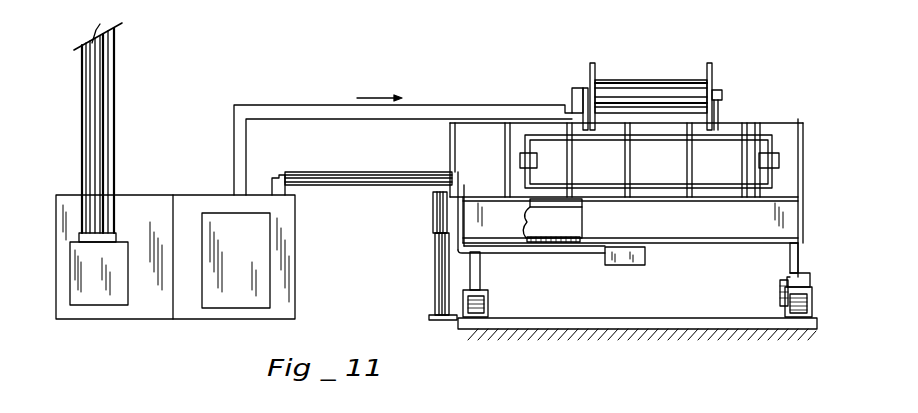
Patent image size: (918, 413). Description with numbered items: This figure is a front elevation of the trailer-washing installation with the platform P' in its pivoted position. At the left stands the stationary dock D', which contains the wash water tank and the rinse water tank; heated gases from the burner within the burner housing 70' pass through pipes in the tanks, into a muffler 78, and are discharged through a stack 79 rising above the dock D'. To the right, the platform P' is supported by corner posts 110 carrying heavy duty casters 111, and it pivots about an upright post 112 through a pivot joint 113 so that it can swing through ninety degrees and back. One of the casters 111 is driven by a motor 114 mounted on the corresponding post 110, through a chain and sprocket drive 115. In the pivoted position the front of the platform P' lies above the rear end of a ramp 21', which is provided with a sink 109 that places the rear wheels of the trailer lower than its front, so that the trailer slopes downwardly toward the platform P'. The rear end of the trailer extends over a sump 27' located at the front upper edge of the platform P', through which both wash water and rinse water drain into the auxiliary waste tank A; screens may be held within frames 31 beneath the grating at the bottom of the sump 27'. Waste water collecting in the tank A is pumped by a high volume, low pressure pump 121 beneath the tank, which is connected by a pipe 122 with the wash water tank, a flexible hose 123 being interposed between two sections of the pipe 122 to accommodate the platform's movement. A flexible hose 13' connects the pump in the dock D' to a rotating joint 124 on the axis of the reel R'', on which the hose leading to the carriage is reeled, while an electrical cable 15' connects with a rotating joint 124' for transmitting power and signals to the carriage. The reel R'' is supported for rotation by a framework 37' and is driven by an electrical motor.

The stack 79 is at (113, 90).
The muffler 78 is at (123, 283).
The burner housing 70' is at (272, 260).
The dock D' is at (175, 231).
The flexible hose 13' is at (403, 128).
The pipe 122 is at (272, 182).
The flexible hose 123 is at (362, 146).
The pivot joint 113 is at (433, 212).
The upright post 112 is at (432, 272).
The platform P' is at (646, 198).
The framework 37' is at (649, 161).
The sump 27' is at (630, 223).
The frames 31 is at (578, 212).
The auxiliary waste tank A is at (548, 225).
The corner posts 110 is at (483, 275).
The pump 121 is at (645, 258).
The casters 111 is at (486, 313).
The motor 114 is at (808, 272).
The chain and sprocket drive 115 is at (780, 290).
The ramp 21' is at (637, 308).
The sink 109 is at (642, 326).
The rotating joint 124 is at (561, 97).
The reel R'' is at (651, 77).
The rotating joint 124' is at (743, 91).
The electrical cable 15' is at (751, 102).